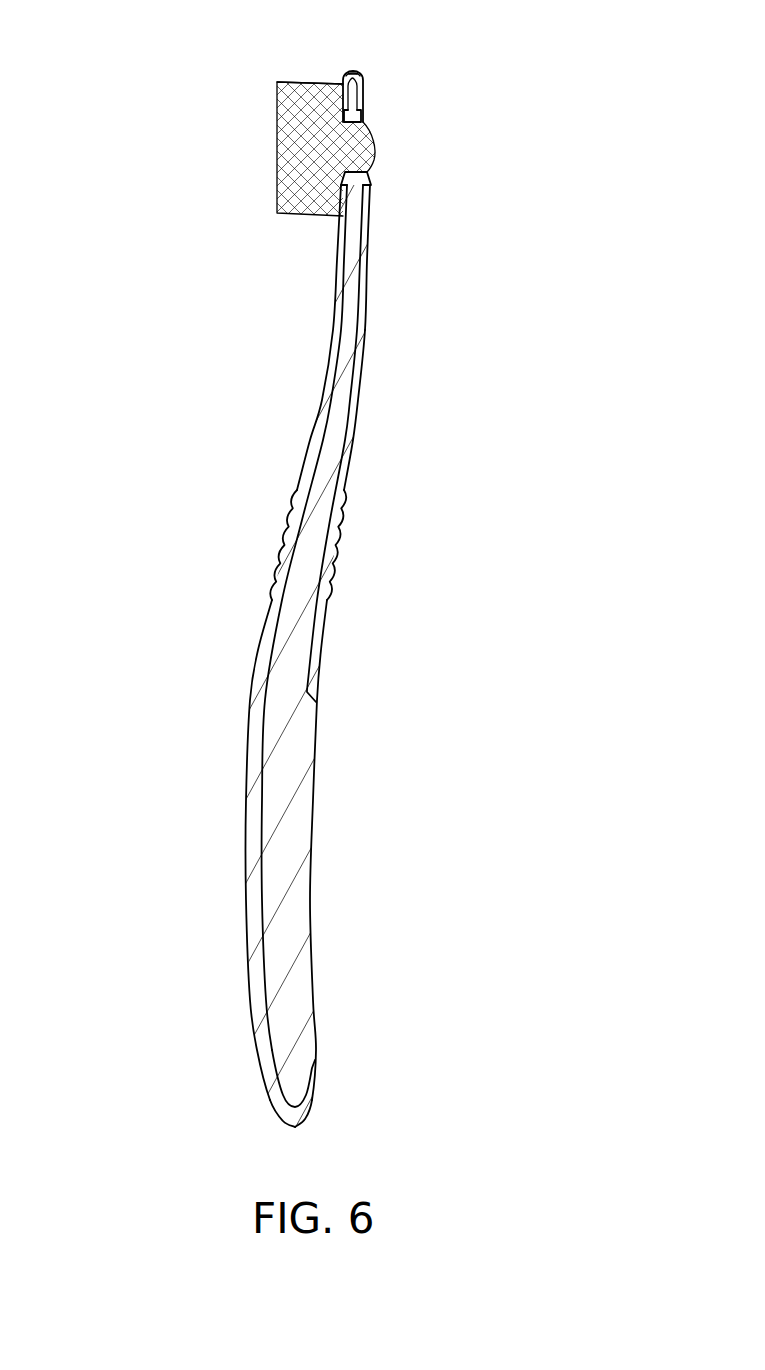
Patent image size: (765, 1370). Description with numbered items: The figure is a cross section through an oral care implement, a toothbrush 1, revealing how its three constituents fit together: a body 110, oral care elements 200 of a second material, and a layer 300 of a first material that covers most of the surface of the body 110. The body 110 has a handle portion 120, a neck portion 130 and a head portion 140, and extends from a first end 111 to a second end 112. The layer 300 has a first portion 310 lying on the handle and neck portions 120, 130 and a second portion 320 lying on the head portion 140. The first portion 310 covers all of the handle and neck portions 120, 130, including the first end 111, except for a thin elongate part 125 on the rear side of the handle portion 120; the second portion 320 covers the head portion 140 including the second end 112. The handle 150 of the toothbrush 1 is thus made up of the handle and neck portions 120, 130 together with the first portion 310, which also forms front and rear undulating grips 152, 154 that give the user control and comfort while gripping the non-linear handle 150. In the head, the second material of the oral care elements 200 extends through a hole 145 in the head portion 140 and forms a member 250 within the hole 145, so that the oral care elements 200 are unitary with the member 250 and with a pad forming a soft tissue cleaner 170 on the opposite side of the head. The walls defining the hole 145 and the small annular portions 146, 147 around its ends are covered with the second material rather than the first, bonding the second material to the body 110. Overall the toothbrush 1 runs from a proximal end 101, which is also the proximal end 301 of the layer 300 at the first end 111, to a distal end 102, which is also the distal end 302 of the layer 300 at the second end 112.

The toothbrush 1 is at (194, 348).
The proximal end 101 is at (294, 1127).
The distal end 102 is at (350, 73).
The body 110 is at (286, 718).
The first end of the body 111 is at (297, 1108).
The second end of the body 112 is at (362, 77).
The handle portion 120 is at (290, 852).
The thin elongate part 125 is at (310, 808).
The neck portion 130 is at (353, 267).
The head portion 140 is at (352, 100).
The hole 145 is at (375, 167).
The annular portion 146 is at (347, 121).
The annular portion 147 is at (368, 119).
The handle 150 is at (201, 655).
The front undulating grip 152 is at (283, 544).
The rear undulating grip 154 is at (336, 542).
The soft tissue cleaner 170 is at (374, 153).
The oral care elements 200 is at (290, 175).
The member 250 is at (352, 148).
The layer of first material 300 is at (348, 478).
The proximal end of the layer 301 is at (367, 1131).
The distal end of the layer 302 is at (437, 44).
The first portion 310 is at (248, 808).
The second portion 320 is at (366, 217).